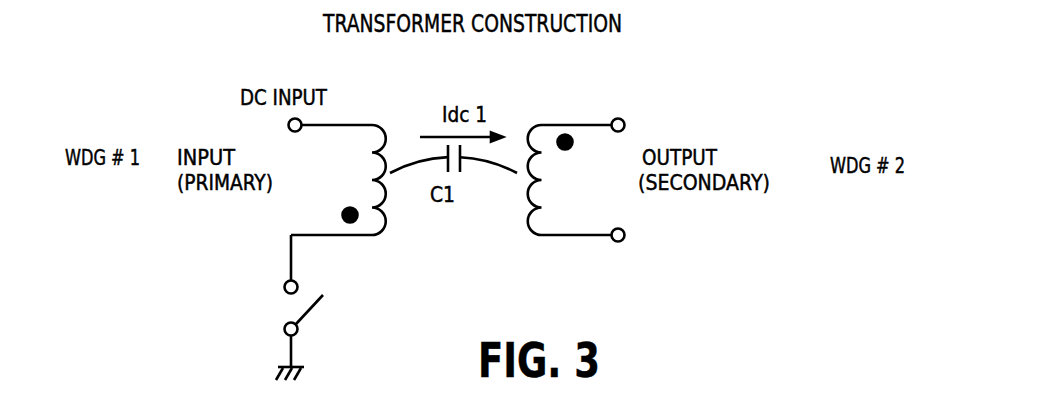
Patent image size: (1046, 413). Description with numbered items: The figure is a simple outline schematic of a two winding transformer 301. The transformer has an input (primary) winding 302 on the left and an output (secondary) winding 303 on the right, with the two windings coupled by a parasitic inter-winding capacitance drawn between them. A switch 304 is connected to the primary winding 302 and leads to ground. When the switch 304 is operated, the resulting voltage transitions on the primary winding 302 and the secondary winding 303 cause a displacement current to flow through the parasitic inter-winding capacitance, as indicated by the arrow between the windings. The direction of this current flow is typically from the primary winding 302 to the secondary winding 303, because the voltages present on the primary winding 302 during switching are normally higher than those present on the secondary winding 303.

The two winding transformer 301 is at (663, 85).
The input (primary) winding 302 is at (337, 177).
The output (secondary) winding 303 is at (576, 180).
The switch 304 is at (268, 307).